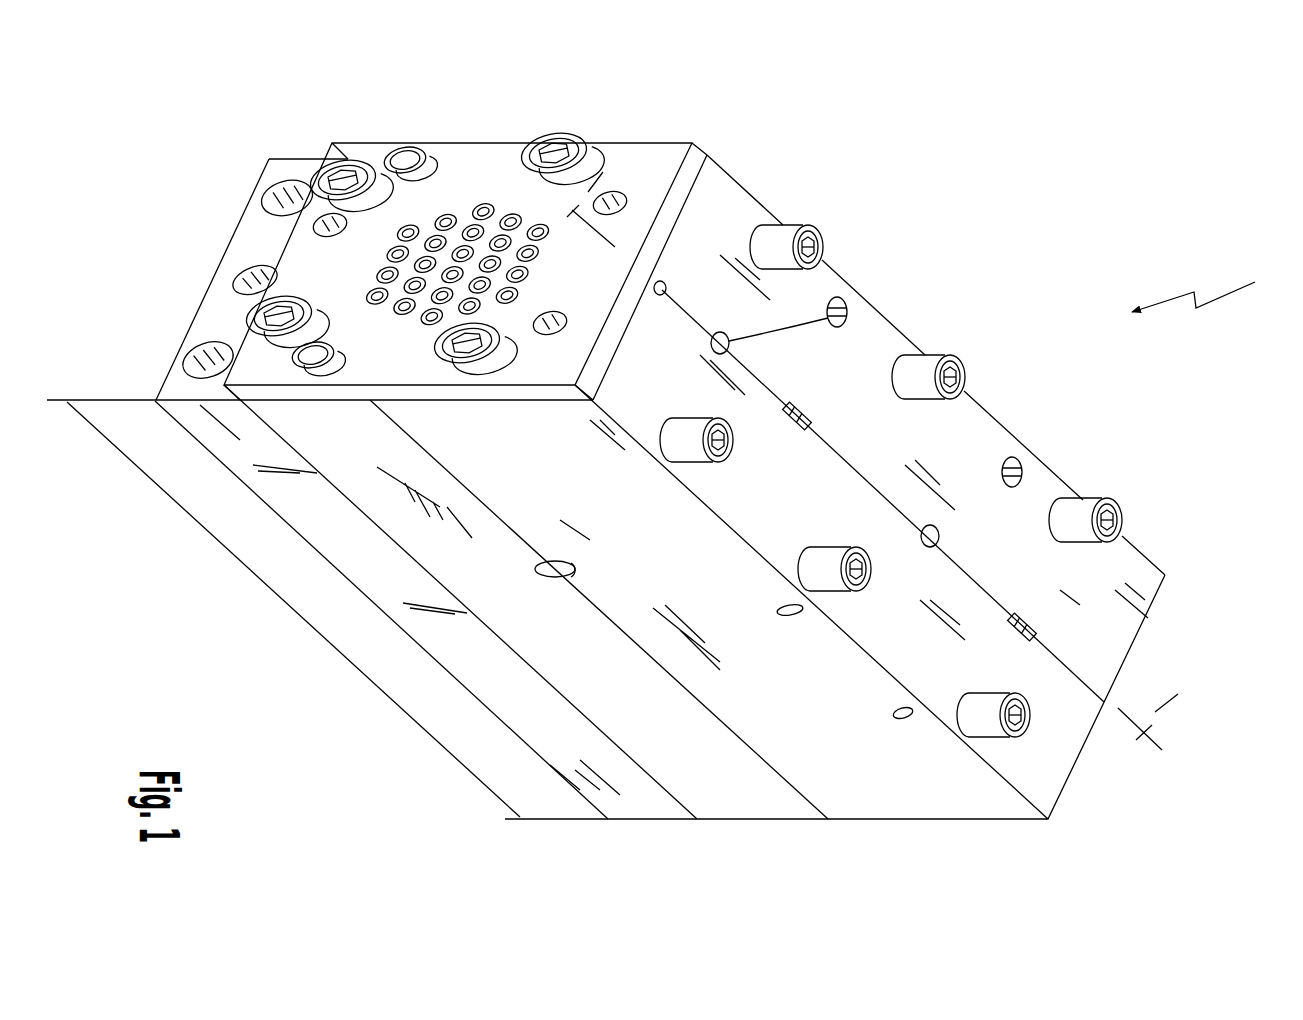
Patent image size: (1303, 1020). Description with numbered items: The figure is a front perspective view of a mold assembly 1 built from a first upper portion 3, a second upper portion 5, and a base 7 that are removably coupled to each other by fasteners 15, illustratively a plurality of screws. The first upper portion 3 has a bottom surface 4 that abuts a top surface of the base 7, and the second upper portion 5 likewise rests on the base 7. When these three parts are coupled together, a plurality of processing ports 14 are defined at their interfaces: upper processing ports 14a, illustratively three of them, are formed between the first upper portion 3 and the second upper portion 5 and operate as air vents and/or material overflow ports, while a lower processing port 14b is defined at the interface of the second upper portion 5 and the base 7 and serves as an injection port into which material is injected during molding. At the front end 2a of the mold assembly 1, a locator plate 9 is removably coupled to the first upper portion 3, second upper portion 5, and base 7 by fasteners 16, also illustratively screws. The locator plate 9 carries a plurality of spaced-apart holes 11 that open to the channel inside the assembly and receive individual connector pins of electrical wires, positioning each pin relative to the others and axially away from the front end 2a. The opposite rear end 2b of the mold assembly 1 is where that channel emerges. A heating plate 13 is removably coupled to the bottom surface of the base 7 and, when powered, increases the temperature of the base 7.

The mold assembly 1 is at (1216, 289).
The front end 2a is at (705, 203).
The rear end 2b is at (1080, 776).
The first upper portion 3 is at (1122, 563).
The bottom surface 4 is at (900, 461).
The second upper portion 5 is at (900, 812).
The base 7 is at (762, 812).
The locator plate 9 is at (710, 157).
The holes 11 is at (483, 203).
The heating plate 13 is at (640, 812).
The processing ports 14 is at (874, 446).
The upper processing ports 14a is at (846, 312).
The lower processing port 14b is at (576, 572).
The fastener 15 is at (823, 247).
The fastener 16 is at (553, 132).